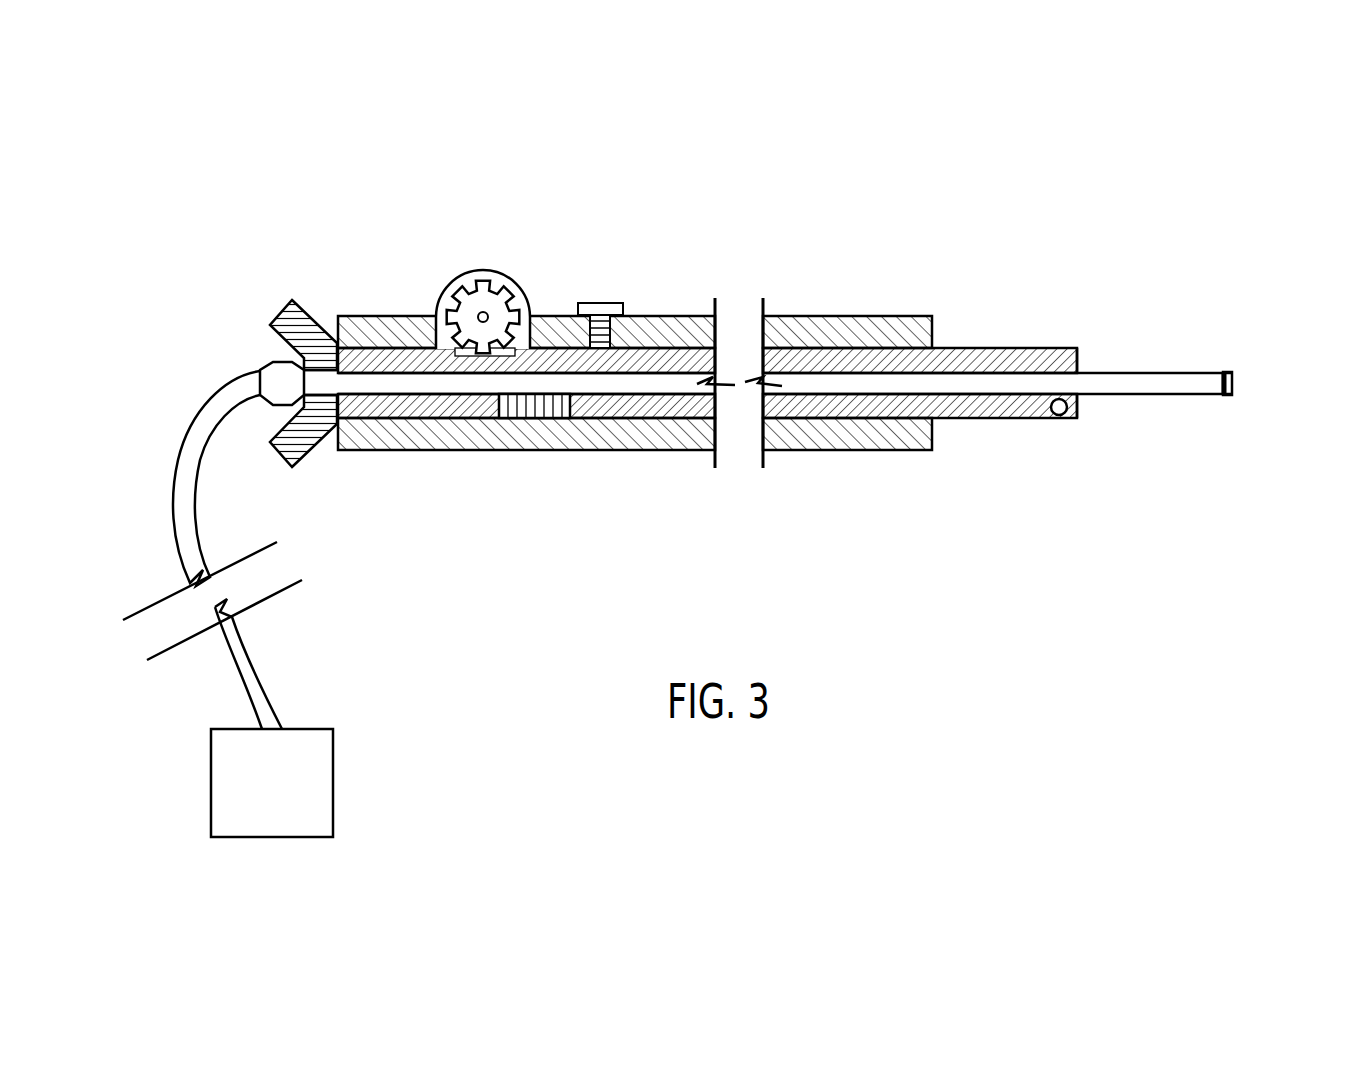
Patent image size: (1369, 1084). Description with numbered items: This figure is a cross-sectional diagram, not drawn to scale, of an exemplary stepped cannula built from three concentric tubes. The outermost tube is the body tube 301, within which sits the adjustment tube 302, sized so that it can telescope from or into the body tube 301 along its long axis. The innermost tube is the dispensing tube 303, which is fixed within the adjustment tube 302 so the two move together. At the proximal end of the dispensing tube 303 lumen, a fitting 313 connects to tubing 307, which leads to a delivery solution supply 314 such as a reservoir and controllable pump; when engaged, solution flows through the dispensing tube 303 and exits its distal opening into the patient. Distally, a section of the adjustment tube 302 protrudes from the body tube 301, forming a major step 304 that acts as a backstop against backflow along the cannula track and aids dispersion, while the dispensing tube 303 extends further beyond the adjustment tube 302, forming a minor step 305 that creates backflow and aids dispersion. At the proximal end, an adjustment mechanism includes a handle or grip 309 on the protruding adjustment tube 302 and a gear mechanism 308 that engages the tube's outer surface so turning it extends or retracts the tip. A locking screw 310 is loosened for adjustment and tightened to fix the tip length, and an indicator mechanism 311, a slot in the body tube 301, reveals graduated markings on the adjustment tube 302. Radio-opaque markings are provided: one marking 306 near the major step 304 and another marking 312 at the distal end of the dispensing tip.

The body tube 301 is at (860, 328).
The adjustment tube 302 is at (825, 362).
The dispensing tube 303 is at (790, 382).
The major step 304 is at (932, 448).
The minor step 305 is at (1079, 410).
The radio-opaque marking 306 is at (1067, 423).
The tubing 307 is at (175, 470).
The gear mechanism 308 is at (465, 297).
The handle or grip 309 is at (290, 312).
The locking screw 310 is at (602, 308).
The indicator mechanism 311 is at (517, 410).
The radio-opaque marking 312 is at (1227, 370).
The fitting 313 is at (278, 365).
The delivery solution supply 314 is at (300, 777).